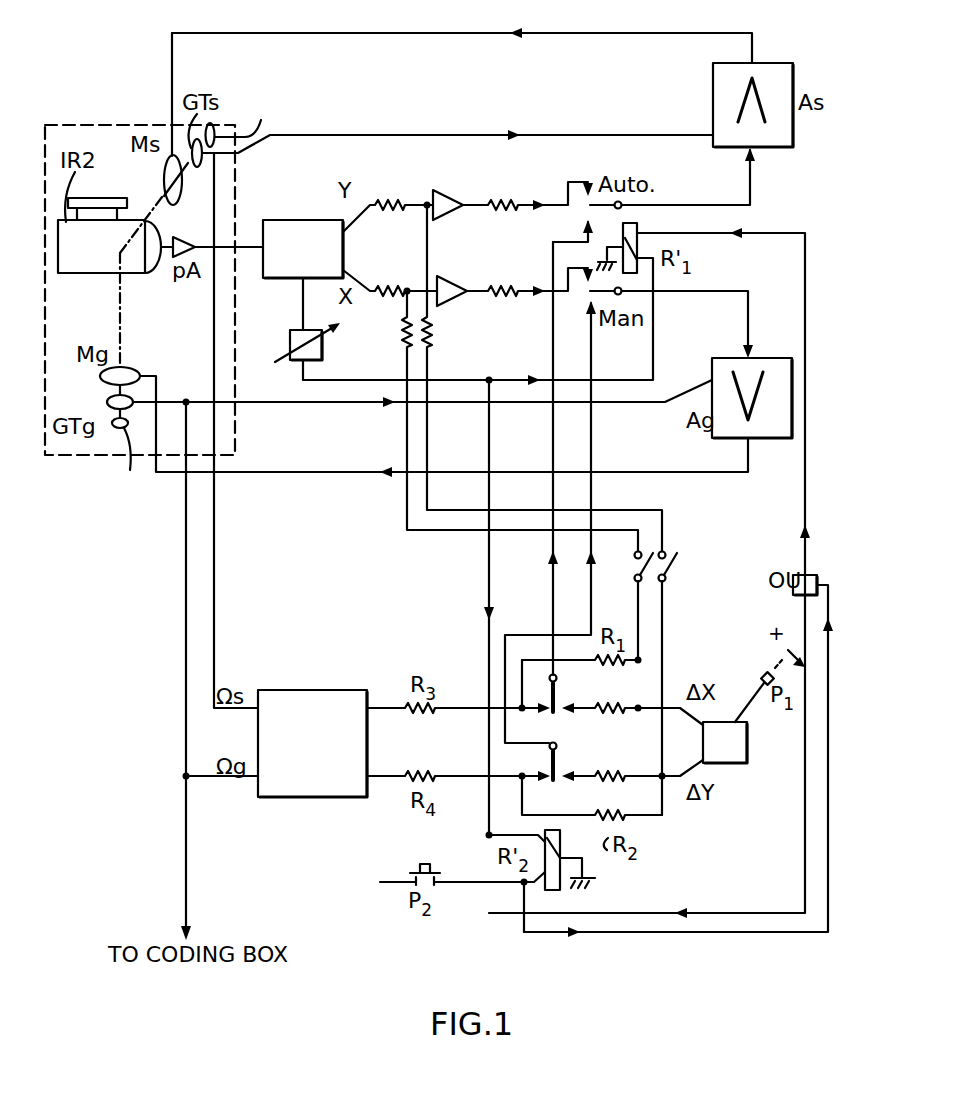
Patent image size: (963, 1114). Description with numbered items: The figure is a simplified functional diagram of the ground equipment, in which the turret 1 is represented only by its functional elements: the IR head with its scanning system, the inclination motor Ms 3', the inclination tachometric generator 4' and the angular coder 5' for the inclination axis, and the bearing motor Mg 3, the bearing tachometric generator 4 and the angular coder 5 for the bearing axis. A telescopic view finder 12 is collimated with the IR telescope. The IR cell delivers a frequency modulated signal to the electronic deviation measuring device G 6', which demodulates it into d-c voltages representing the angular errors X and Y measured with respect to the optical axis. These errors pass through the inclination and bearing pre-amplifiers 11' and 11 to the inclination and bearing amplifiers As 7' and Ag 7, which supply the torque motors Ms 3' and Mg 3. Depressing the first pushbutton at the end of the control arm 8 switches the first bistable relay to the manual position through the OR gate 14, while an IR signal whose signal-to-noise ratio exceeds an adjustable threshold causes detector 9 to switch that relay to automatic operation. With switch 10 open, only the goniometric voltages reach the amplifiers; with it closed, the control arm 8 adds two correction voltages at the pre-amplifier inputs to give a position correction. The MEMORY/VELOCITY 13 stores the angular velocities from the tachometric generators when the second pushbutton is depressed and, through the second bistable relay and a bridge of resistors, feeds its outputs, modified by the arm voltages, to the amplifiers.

The turret 1 is at (98, 456).
The motor Mg 3 is at (100, 381).
The motor Ms 3' is at (150, 180).
The tachometric generator GTg 4 is at (103, 400).
The tachometric generator GTs 4' is at (227, 118).
The angular coder 5 is at (121, 459).
The angular coder 5' is at (245, 117).
The electronic deviation measuring device G 6' is at (303, 227).
The bearing amplifier Ag 7 is at (752, 380).
The inclination amplifier As 7' is at (753, 89).
The control arm 8 is at (726, 735).
The detector 9 is at (292, 333).
The switch 10 is at (668, 556).
The bearing pre-amplifier 11 is at (462, 305).
The inclination pre-amplifier 11' is at (463, 193).
The telescopic view finder 12 is at (105, 203).
The MEMORY/VELOCITY 13 is at (313, 799).
The OR gate 14 is at (812, 590).